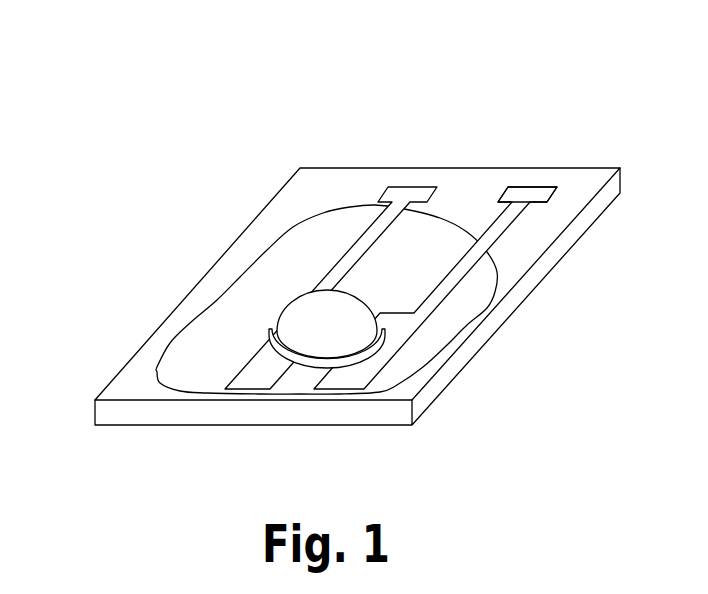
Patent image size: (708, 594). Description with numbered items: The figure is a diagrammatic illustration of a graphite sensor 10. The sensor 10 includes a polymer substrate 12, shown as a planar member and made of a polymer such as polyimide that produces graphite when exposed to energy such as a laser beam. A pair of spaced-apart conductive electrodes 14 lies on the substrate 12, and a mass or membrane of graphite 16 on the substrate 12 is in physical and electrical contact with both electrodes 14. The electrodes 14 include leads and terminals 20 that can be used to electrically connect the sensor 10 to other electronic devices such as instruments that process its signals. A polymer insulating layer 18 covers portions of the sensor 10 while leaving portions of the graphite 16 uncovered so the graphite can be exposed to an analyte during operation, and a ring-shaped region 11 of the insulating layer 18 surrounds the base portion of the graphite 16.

The graphite sensor 10 is at (521, 58).
The ring-shaped region 11 is at (375, 334).
The polymer substrate 12 is at (120, 370).
The conductive electrodes 14 is at (320, 290).
The graphite 16 is at (322, 330).
The polymer insulating layer 18 is at (300, 237).
The leads and terminals 20 is at (530, 187).